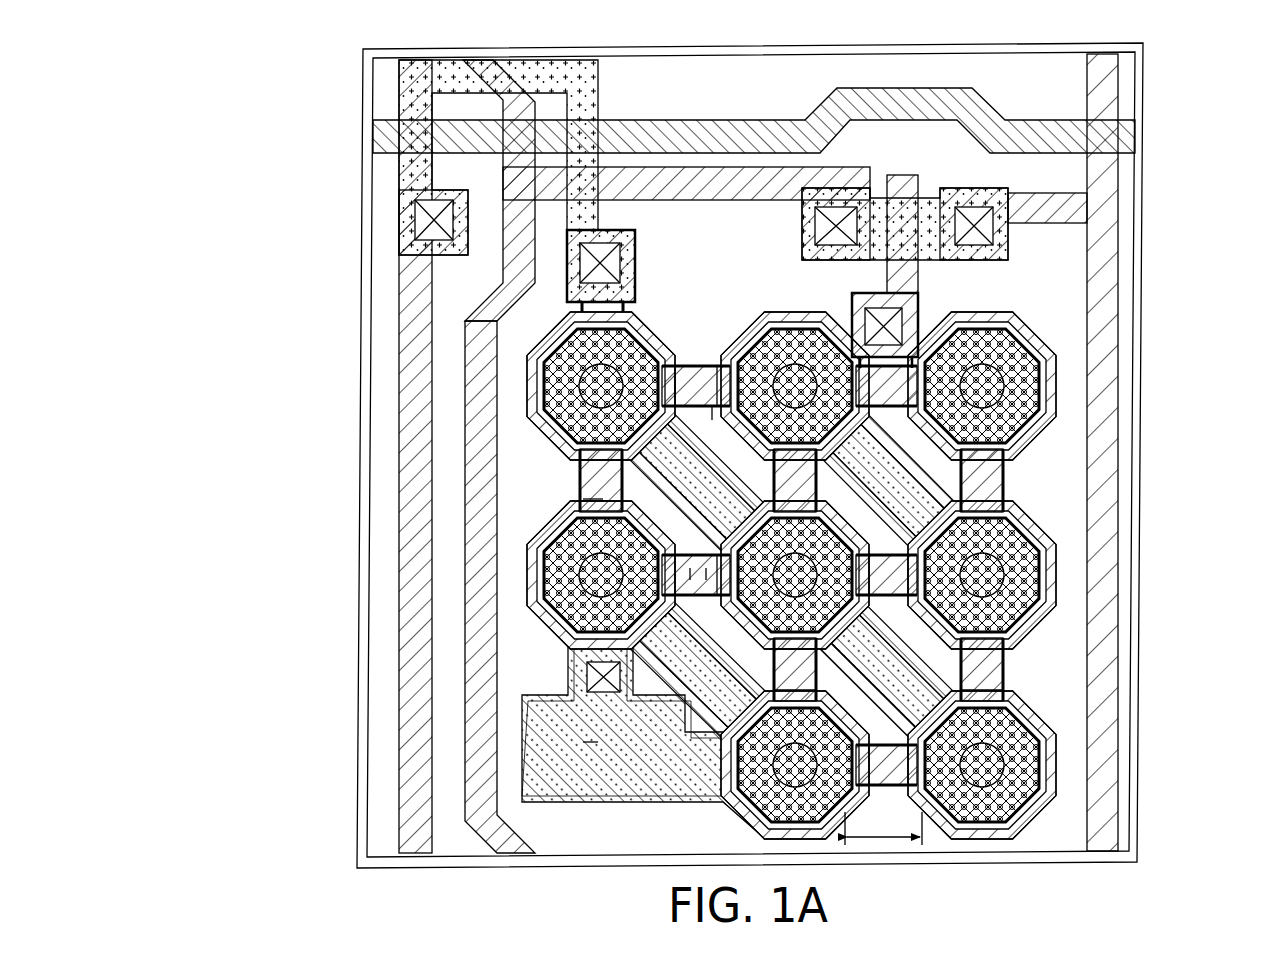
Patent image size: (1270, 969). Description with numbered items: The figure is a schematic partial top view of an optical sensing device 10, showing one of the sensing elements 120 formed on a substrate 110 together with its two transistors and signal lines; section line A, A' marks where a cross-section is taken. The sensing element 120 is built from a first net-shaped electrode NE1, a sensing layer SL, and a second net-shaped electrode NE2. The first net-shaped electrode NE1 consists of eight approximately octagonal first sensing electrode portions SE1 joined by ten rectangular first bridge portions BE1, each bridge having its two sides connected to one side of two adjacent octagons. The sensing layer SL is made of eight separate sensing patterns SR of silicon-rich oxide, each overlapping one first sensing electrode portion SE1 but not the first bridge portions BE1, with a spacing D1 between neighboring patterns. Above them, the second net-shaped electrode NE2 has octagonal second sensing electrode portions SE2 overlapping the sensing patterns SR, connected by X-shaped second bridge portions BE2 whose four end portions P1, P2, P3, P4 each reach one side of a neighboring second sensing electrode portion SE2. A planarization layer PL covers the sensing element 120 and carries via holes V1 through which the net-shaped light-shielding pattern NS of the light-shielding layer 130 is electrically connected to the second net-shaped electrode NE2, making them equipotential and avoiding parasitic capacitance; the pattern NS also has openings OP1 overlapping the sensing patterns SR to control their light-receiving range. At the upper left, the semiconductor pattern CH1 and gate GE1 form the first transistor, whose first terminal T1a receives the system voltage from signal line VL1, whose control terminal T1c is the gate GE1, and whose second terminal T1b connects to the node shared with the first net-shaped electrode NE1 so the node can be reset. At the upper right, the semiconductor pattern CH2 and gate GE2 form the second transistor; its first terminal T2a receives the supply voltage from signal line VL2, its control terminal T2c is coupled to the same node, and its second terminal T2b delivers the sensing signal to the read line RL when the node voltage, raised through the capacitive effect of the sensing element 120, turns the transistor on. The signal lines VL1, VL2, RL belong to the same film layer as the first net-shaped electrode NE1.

The substrate 110 is at (1138, 72).
The sensing element 120 is at (143, 47).
The optical sensing device 10 is at (1249, 889).
The planarization layer PL is at (1127, 100).
The signal line RL is at (1103, 458).
The signal line VL1 is at (415, 378).
The signal line VL2 is at (480, 452).
The via hole V1 is at (612, 673).
The semiconductor pattern CH1 is at (528, 60).
The semiconductor pattern CH2 is at (930, 255).
The gate GE1 is at (572, 164).
The gate GE2 is at (914, 150).
The first terminal T1a is at (408, 222).
The second terminal T1b is at (575, 268).
The control terminal T1c is at (605, 125).
The first terminal T2a is at (832, 190).
The second terminal T2b is at (973, 192).
The control terminal T2c is at (905, 175).
The first net-shaped electrode NE1 is at (143, 153).
The second net-shaped electrode NE2 is at (143, 238).
The first sensing electrode portion SE1 is at (1052, 398).
The first bridge portion BE1 is at (980, 670).
The second sensing electrode portion SE2 is at (780, 312).
The second bridge portion BE2 is at (703, 470).
The sensing pattern SR is at (879, 739).
The sensing layer SL is at (1050, 772).
The net-shaped light-shielding pattern NS is at (915, 575).
The light-shielding layer 130 is at (1033, 520).
The opening OP1 is at (990, 583).
The end portion P1 is at (682, 393).
The end portion P2 is at (690, 568).
The end portion P3 is at (706, 568).
The end portion P4 is at (712, 420).
The spacing D1 is at (883, 826).
The section line A is at (590, 731).
The section line A' is at (593, 488).